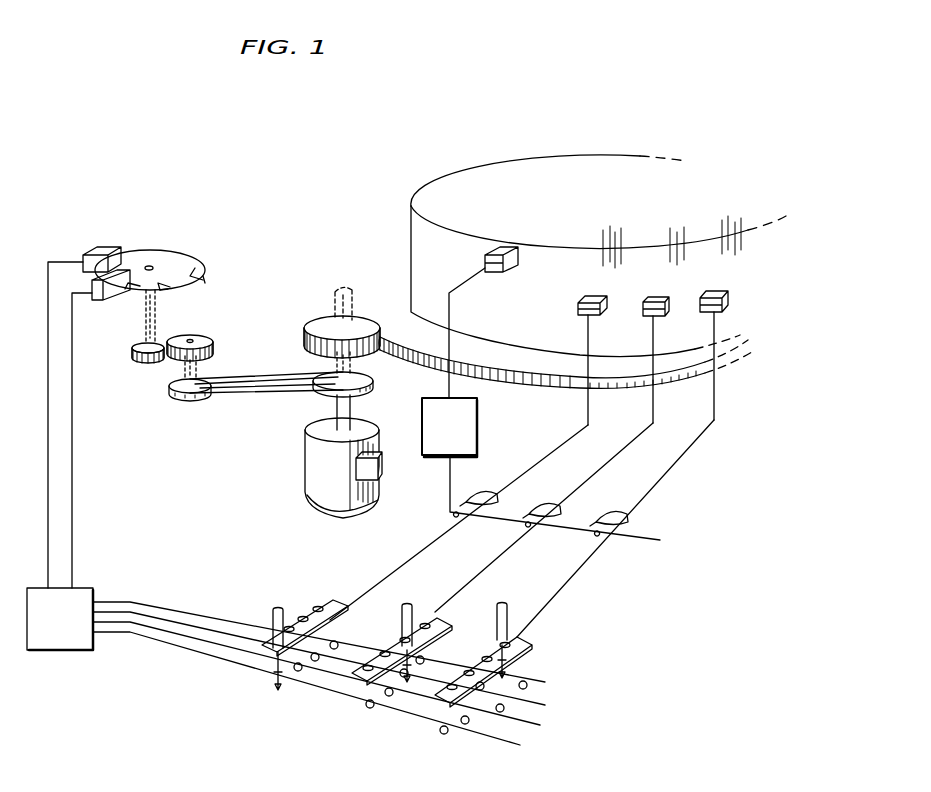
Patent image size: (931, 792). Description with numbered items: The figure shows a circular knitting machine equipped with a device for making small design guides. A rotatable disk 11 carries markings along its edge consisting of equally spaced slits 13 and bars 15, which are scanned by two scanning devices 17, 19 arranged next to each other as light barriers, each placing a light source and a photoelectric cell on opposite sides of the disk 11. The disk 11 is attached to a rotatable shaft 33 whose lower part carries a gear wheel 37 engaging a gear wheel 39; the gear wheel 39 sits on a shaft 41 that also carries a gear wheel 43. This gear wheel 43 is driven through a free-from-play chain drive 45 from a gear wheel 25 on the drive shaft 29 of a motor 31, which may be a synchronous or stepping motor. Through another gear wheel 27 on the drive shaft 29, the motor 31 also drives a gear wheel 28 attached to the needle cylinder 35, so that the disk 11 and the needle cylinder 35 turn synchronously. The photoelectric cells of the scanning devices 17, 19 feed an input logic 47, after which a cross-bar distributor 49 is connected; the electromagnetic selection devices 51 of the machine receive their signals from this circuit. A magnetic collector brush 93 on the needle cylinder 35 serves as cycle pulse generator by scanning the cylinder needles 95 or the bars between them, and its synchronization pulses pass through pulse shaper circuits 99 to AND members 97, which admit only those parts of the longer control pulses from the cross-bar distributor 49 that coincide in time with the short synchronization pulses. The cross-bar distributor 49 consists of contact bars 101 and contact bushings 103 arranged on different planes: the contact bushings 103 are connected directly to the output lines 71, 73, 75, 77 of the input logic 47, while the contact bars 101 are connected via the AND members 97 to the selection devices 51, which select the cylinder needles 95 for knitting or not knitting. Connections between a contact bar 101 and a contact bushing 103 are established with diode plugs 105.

The rotatable disk 11 is at (165, 258).
The slits 13 is at (168, 290).
The bars 15 is at (205, 282).
The scanning device 17 is at (86, 256).
The scanning device 19 is at (99, 301).
The gear wheel 25 is at (375, 382).
The gear wheel 27 is at (320, 327).
The gear wheel 28 is at (527, 372).
The drive shaft 29 is at (354, 303).
The motor 31 is at (366, 503).
The rotatable shaft 33 is at (145, 323).
The needle cylinder 35 is at (474, 188).
The gear wheel 37 is at (138, 360).
The gear wheel 39 is at (214, 350).
The shaft 41 is at (185, 371).
The gear wheel 43 is at (170, 396).
The chain drive 45 is at (257, 400).
The input logic 47 is at (75, 632).
The cross-bar distributor 49 is at (470, 644).
The electromagnetic selection devices 51 is at (714, 296).
The output line 71 is at (319, 640).
The output line 73 is at (319, 658).
The output line 75 is at (316, 673).
The output line 77 is at (306, 688).
The magnetic collector brush 93 is at (486, 252).
The cylinder needles 95 is at (620, 246).
The AND members 97 is at (614, 513).
The pulse shaper circuits 99 is at (445, 442).
The contact bars 101 is at (395, 672).
The contact bushings 103 is at (470, 712).
The diode plugs 105 is at (490, 612).